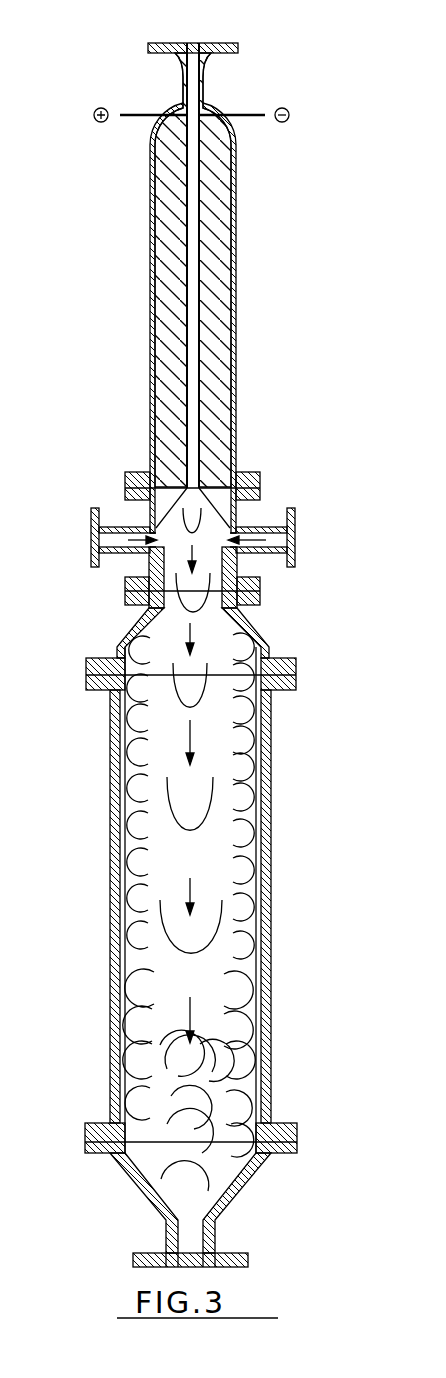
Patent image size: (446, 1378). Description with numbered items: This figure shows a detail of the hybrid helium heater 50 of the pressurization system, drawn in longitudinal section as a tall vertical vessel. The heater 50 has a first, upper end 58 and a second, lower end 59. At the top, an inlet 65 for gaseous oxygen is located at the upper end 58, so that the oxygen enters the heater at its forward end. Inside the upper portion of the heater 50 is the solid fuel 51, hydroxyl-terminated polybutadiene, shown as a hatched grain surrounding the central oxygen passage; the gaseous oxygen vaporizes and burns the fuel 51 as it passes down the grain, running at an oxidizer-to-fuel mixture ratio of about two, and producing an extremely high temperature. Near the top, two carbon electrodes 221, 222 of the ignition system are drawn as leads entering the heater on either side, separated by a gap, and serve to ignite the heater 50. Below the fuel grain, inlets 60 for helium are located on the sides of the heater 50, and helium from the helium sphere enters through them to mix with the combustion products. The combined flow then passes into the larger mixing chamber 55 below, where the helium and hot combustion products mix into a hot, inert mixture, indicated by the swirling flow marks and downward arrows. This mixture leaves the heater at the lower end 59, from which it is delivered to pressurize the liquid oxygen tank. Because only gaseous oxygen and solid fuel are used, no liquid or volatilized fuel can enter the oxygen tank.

The hybrid helium heater 50 is at (223, 181).
The fuel 51 is at (172, 234).
The mixing chamber 55 is at (266, 769).
The first, upper end 58 is at (148, 45).
The second, lower end 59 is at (134, 1256).
The inlet 60 is at (91, 541).
The inlet 65 is at (199, 45).
The carbon electrode 221 is at (133, 112).
The carbon electrode 222 is at (248, 113).